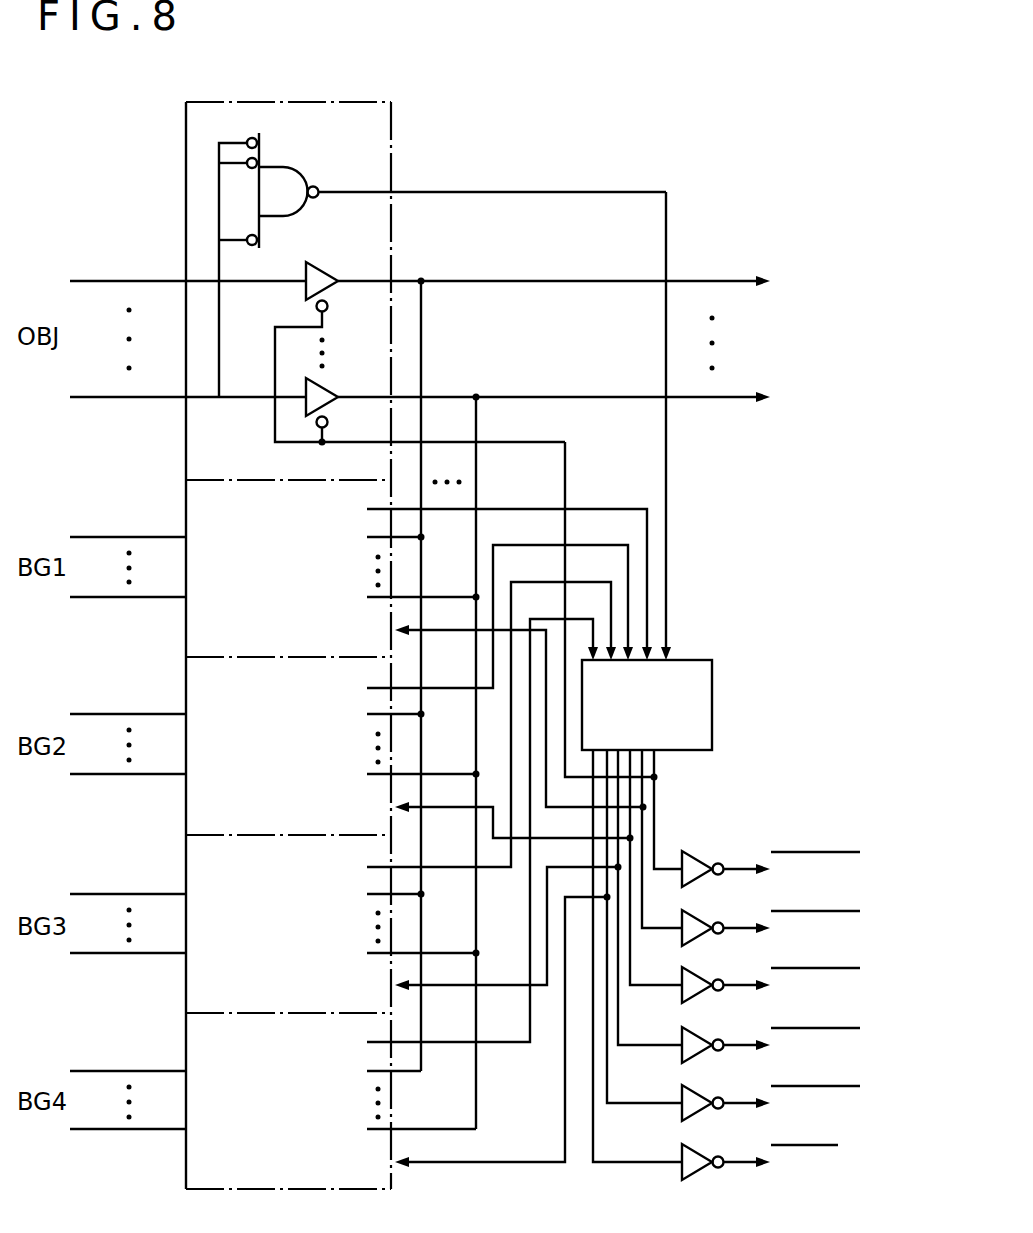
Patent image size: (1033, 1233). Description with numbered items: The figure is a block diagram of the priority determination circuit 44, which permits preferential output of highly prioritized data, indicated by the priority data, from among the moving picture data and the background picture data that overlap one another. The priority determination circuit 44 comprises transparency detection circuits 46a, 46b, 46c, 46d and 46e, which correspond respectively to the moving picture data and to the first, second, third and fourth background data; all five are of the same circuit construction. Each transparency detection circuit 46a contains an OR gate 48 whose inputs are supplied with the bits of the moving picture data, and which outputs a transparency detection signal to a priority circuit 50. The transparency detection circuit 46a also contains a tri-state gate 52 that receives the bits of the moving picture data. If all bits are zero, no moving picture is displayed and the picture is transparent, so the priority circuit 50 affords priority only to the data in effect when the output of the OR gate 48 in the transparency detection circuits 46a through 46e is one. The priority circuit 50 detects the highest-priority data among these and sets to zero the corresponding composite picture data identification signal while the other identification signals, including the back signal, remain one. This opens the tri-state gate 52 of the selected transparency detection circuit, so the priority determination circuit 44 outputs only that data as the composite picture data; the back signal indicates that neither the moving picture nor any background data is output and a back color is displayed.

The priority determination circuit 44 is at (656, 97).
The transparency detection circuit 46a is at (420, 303).
The transparency detection circuit 46b is at (361, 660).
The transparency detection circuit 46c is at (352, 693).
The transparency detection circuit 46d is at (346, 798).
The transparency detection circuit 46e is at (340, 904).
The OR gate 48 is at (286, 178).
The priority circuit 50 is at (712, 660).
The tri-state gate 52 is at (331, 258).